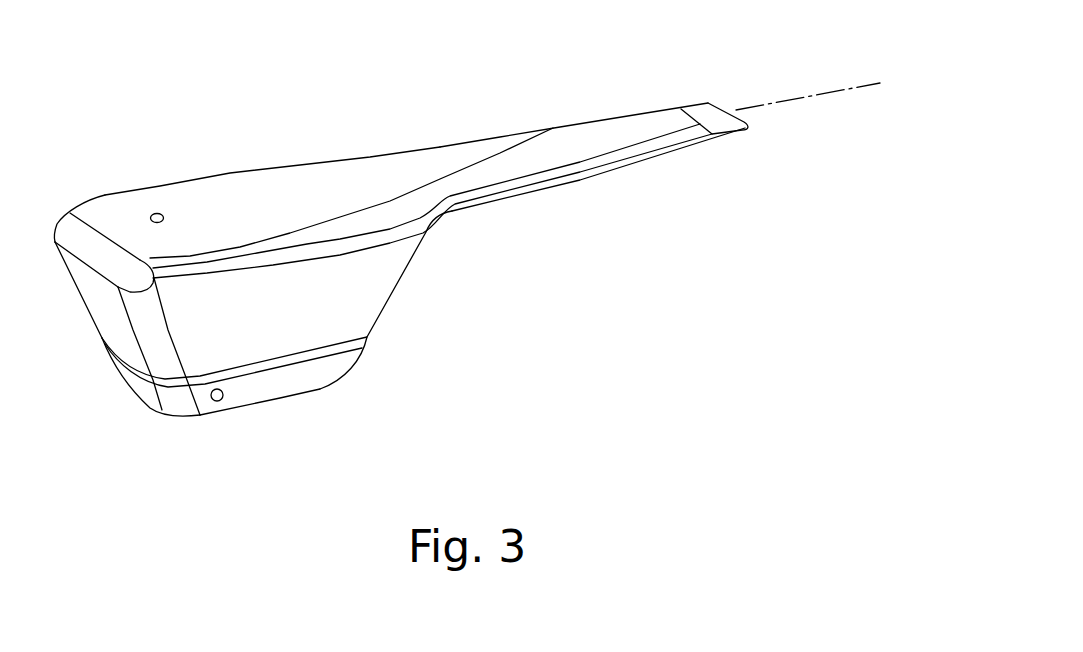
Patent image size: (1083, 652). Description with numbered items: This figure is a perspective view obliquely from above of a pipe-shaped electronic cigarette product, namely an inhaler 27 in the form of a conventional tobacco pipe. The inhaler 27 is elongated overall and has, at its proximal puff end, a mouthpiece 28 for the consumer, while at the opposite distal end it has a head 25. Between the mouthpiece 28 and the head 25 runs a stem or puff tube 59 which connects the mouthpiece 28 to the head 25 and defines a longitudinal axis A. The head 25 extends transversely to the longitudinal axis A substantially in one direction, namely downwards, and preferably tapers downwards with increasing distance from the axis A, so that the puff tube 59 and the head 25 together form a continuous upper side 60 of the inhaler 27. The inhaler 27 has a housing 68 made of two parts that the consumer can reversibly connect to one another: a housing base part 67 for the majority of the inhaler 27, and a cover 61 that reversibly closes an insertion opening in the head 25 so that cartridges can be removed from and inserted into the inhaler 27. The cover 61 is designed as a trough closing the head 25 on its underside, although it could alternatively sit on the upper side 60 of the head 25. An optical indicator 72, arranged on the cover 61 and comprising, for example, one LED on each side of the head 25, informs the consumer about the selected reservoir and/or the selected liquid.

The head 25 is at (231, 425).
The inhaler 27 is at (383, 405).
The mouthpiece 28 is at (698, 105).
The puff tube 59 is at (596, 186).
The upper side 60 is at (296, 198).
The cover 61 is at (143, 405).
The housing base part 67 is at (245, 170).
The housing 68 is at (460, 139).
The optical indicator 72 is at (214, 401).
The longitudinal axis A is at (813, 97).